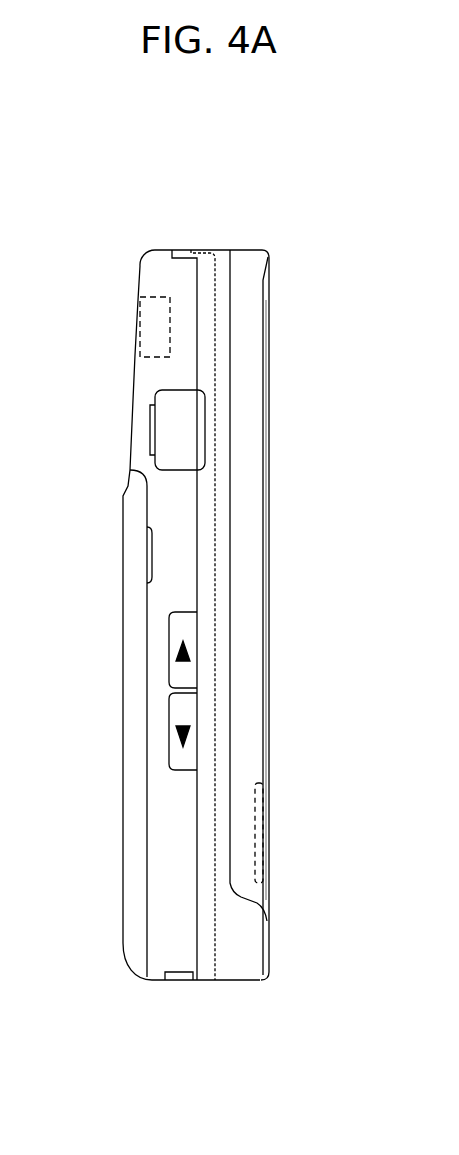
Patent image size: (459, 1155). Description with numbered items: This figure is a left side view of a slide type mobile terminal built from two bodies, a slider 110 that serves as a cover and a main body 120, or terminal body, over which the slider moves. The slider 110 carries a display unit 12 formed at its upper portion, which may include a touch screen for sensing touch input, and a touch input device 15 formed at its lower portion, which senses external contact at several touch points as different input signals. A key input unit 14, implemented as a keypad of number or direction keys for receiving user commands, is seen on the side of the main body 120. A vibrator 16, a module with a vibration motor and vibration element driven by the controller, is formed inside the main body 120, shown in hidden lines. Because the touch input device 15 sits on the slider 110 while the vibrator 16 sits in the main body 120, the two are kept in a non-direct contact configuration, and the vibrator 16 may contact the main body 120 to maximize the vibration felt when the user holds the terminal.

The main body 120 is at (140, 263).
The slider 110 is at (269, 256).
The vibrator 16 is at (148, 331).
The display unit 12 is at (269, 460).
The key input unit 14 is at (174, 731).
The touch input device 15 is at (263, 834).